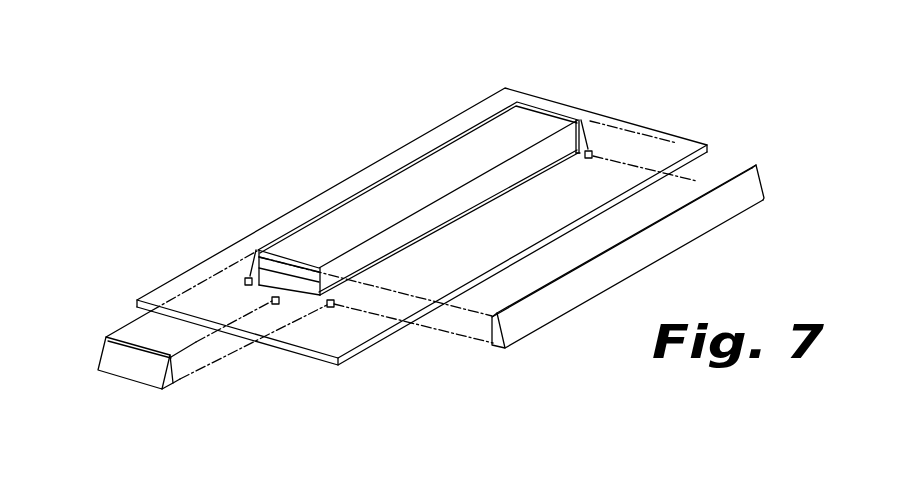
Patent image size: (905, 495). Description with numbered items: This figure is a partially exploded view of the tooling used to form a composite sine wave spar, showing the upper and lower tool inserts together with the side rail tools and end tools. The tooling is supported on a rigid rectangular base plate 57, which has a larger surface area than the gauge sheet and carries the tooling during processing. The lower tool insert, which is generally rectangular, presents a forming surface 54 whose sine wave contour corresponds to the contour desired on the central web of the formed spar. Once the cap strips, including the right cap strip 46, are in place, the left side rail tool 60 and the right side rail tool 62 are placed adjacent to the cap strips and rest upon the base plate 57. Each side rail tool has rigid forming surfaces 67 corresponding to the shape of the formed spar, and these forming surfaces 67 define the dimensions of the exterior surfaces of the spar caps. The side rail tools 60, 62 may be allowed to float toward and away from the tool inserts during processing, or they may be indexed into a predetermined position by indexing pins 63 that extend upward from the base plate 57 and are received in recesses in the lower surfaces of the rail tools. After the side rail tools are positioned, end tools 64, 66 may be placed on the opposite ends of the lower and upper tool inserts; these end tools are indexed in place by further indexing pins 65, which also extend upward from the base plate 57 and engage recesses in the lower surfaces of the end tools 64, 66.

The forming surface 54 is at (677, 143).
The base plate 57 is at (525, 128).
The right cap strip 46 is at (522, 162).
The end tool 66 is at (620, 124).
The left side rail tool 60 is at (246, 278).
The indexing pins 63 is at (592, 158).
The indexing pins 65 is at (275, 304).
The forming surfaces 67 is at (482, 335).
The right side rail tool 62 is at (683, 222).
The end tool 64 is at (128, 362).